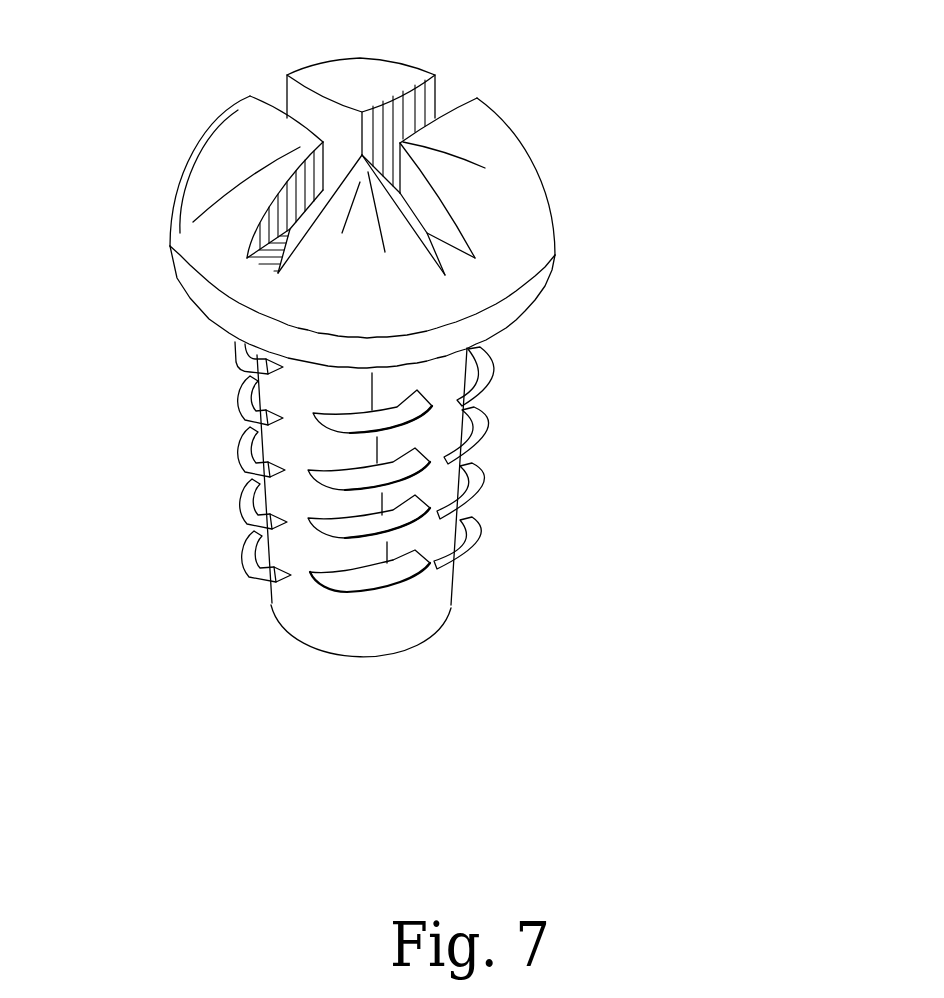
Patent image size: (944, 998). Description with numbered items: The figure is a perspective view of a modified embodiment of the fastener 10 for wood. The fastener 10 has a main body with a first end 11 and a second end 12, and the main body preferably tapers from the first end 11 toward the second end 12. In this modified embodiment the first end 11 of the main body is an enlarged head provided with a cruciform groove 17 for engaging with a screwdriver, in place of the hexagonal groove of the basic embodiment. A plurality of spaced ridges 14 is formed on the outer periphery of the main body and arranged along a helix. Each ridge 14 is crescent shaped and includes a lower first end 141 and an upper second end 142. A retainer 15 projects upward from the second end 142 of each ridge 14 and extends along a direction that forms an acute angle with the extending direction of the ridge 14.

The fastener 10 is at (137, 147).
The first end 11 is at (507, 182).
The cruciform groove 17 is at (420, 103).
The second end 12 is at (427, 633).
The ridge 14 is at (387, 587).
The lower first end 141 is at (343, 583).
The upper second end 142 is at (393, 587).
The retainer 15 is at (413, 565).